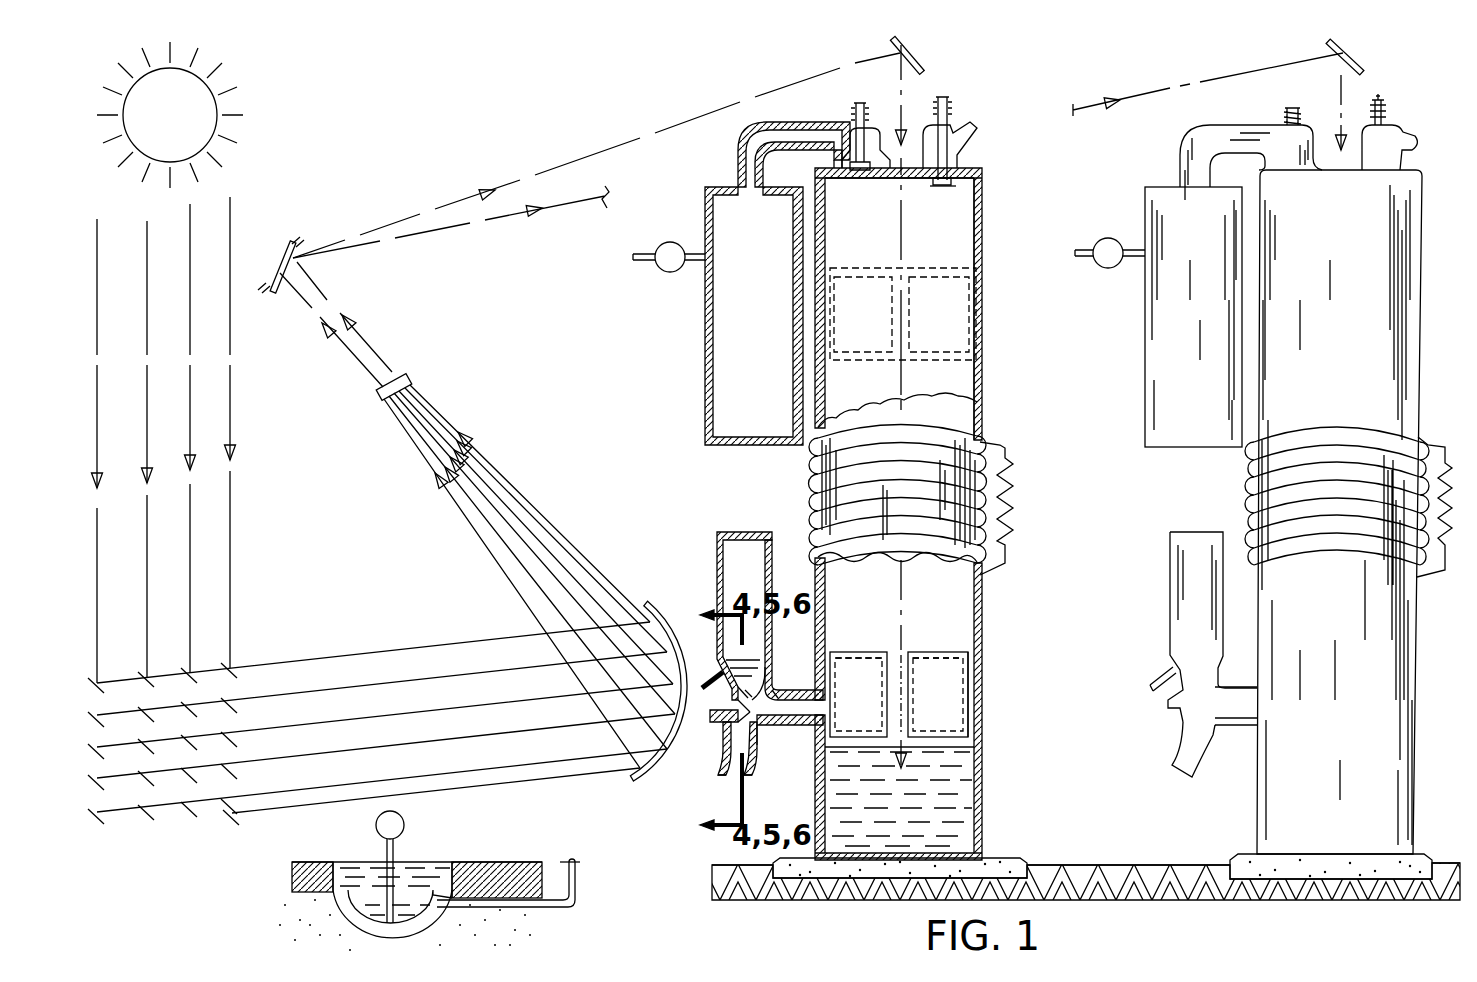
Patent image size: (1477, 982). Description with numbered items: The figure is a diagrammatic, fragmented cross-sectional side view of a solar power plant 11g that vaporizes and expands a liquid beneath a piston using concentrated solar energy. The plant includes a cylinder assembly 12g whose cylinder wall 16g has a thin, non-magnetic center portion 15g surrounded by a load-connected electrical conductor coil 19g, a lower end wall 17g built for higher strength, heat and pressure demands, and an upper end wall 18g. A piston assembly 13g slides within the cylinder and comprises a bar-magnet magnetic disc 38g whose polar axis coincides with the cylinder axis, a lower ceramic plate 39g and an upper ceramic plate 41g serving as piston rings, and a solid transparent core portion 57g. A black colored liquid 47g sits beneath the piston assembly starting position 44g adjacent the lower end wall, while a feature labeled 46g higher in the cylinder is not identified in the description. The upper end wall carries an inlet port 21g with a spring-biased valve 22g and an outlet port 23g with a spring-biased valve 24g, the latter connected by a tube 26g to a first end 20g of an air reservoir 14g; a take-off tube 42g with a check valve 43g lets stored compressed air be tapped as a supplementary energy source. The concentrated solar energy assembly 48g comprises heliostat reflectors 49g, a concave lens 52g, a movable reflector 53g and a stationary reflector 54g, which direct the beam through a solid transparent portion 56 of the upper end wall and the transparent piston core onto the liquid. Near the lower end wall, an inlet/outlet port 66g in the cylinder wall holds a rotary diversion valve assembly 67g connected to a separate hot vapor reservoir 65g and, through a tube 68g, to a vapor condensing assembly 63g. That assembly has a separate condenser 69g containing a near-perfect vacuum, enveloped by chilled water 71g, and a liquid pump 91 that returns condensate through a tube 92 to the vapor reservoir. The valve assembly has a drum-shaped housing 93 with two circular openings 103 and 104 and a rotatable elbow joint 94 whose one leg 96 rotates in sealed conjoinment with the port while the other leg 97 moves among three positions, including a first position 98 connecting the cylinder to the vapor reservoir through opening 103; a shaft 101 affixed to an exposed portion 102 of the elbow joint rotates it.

The power plant 11g is at (1005, 392).
The cylinder assembly 12g is at (990, 244).
The piston assembly 13g is at (957, 692).
The air reservoir 14g is at (692, 374).
The center portion 15g is at (967, 423).
The cylinder wall 16g is at (982, 378).
The lower end wall 17g is at (920, 850).
The upper end wall 18g is at (982, 173).
The electrical conductor coil 19g is at (992, 447).
The first end 20g is at (725, 187).
The inlet port 21g is at (955, 182).
The spring-biased valve 22g is at (950, 130).
The outlet port 23g is at (830, 170).
The spring-biased valve 24g is at (857, 138).
The tube 26g is at (762, 142).
The magnetic disc 38g is at (957, 660).
The lower ceramic plate 39g is at (953, 743).
The upper ceramic plate 41g is at (912, 652).
The take-off tube 42g is at (642, 253).
The check valve 43g is at (673, 240).
The piston assembly starting position 44g is at (988, 652).
The upper magnet assembly 46g is at (988, 265).
The black colored liquid 47g is at (952, 802).
The concentrated solar energy assembly 48g is at (90, 463).
The heliostat reflectors 49g is at (188, 768).
The concave lens 52g is at (413, 377).
The movable reflector 53g is at (277, 246).
The stationary reflector 54g is at (890, 47).
The solid transparent portion 56 is at (903, 158).
The solid transparent core portion 57g is at (902, 677).
The liquid vapor condenser assembly 63g is at (545, 925).
The separate hot vapor reservoir 65g is at (705, 548).
The inlet/outlet port 66g is at (812, 728).
The rotary diversion valve assembly 67g is at (688, 768).
The tube 68g is at (727, 737).
The separate condenser 69g is at (362, 897).
The chilled water 71g is at (417, 868).
The liquid pump 91 is at (376, 826).
The tube 92 is at (410, 819).
The housing 93 is at (727, 693).
The rotatable elbow joint 94 is at (778, 702).
The leg 96 is at (787, 692).
The other leg 97 is at (735, 706).
The first position 98 is at (748, 690).
The shaft 101 is at (720, 706).
The exposed portion 102 is at (750, 716).
The circular opening 103 is at (745, 663).
The circular opening 104 is at (745, 745).